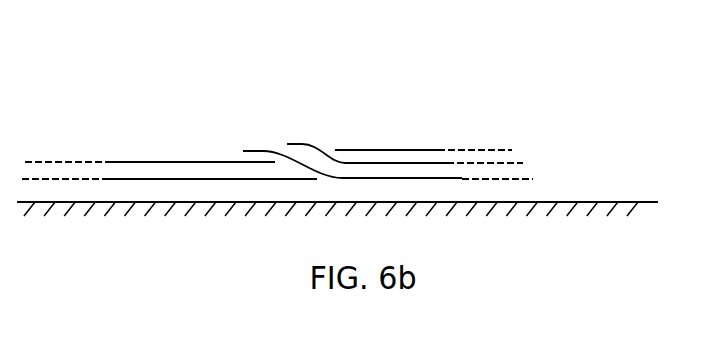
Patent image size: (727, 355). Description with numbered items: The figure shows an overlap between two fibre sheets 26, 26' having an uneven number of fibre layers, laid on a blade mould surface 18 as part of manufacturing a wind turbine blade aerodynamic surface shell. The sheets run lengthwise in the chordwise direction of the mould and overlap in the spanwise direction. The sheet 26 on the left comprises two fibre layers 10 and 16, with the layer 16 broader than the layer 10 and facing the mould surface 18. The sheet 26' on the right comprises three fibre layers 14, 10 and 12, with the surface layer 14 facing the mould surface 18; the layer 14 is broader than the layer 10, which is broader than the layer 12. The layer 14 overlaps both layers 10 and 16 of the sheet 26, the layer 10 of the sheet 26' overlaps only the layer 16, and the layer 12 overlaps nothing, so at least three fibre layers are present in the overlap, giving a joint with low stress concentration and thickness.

The fibre sheet 26 is at (155, 33).
The fibre sheet 26' is at (453, 36).
The fibre layer 10 is at (153, 162).
The fibre layer 12 is at (347, 149).
The fibre layer 14 is at (412, 178).
The fibre layer 16 is at (213, 178).
The blade mould surface 18 is at (628, 202).